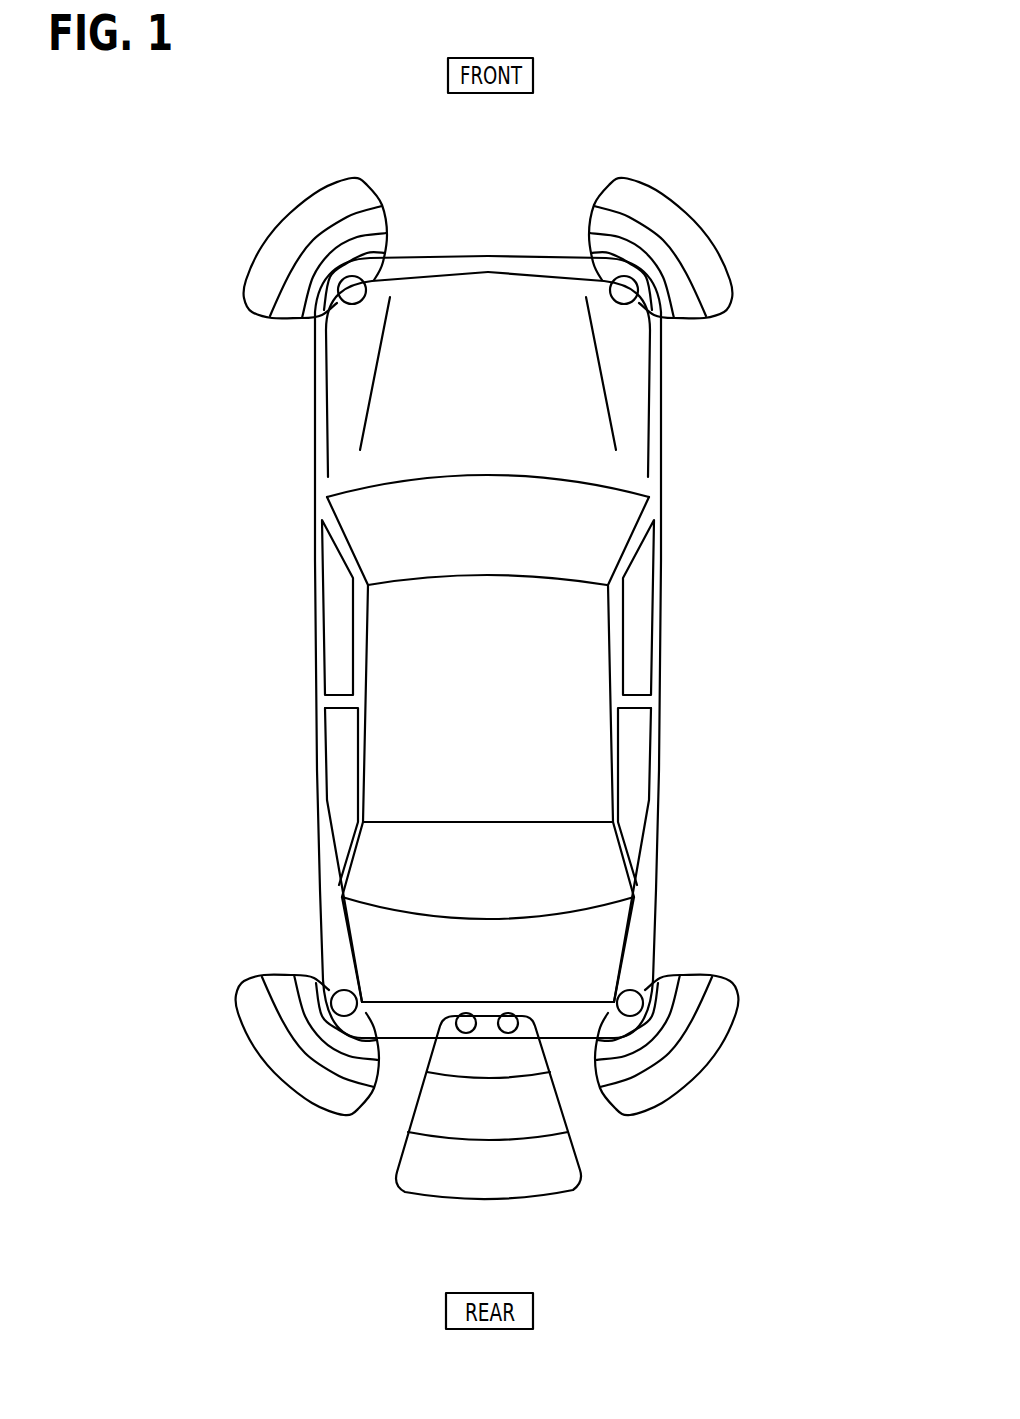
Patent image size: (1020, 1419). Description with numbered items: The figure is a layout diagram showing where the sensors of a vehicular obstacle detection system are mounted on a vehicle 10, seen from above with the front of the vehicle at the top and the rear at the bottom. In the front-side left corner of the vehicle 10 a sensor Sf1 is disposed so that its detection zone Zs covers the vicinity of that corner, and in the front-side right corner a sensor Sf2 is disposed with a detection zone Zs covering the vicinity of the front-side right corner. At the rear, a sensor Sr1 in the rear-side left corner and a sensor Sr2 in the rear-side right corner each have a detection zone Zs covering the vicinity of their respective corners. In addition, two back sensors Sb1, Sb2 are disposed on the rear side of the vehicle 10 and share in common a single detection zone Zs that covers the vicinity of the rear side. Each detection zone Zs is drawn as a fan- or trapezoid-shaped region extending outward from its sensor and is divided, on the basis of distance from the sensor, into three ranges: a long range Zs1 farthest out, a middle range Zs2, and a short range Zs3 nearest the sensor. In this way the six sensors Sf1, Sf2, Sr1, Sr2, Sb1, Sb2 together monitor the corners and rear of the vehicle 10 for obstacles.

The vehicle 10 is at (663, 613).
The sensor Sf1 is at (366, 277).
The sensor Sf2 is at (608, 253).
The sensor Sr1 is at (327, 995).
The sensor Sr2 is at (653, 990).
The back sensor Sb1 is at (465, 1012).
The back sensor Sb2 is at (507, 1012).
The detection zone Zs is at (377, 180).
The long range Zs1 is at (258, 298).
The middle range Zs2 is at (285, 312).
The short range Zs3 is at (313, 316).